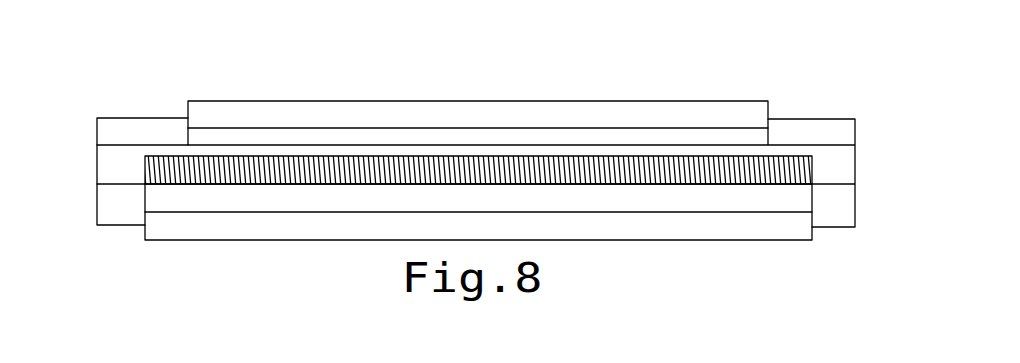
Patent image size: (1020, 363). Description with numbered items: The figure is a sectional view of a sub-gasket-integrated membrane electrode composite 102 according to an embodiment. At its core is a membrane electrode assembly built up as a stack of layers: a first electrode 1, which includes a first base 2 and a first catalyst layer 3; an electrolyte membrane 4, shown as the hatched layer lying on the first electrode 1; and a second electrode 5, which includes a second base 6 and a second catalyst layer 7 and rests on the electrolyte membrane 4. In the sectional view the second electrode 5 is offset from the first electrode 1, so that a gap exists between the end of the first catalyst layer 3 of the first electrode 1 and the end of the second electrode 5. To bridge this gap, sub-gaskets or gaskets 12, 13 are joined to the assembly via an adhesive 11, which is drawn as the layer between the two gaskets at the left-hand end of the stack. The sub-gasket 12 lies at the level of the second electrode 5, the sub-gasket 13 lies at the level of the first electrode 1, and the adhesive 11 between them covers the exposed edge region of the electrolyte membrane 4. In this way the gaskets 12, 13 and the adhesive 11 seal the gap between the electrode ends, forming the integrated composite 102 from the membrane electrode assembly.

The sub-gasket-integrated membrane electrode composite 102 is at (45, 64).
The first electrode 1 is at (536, 212).
The first base 2 is at (812, 223).
The first catalyst layer 3 is at (790, 203).
The electrolyte membrane 4 is at (790, 177).
The second electrode 5 is at (558, 164).
The second base 6 is at (745, 123).
The second catalyst layer 7 is at (745, 148).
The adhesive 11 is at (108, 170).
The sub-gasket 12 is at (108, 127).
The sub-gasket 13 is at (108, 210).